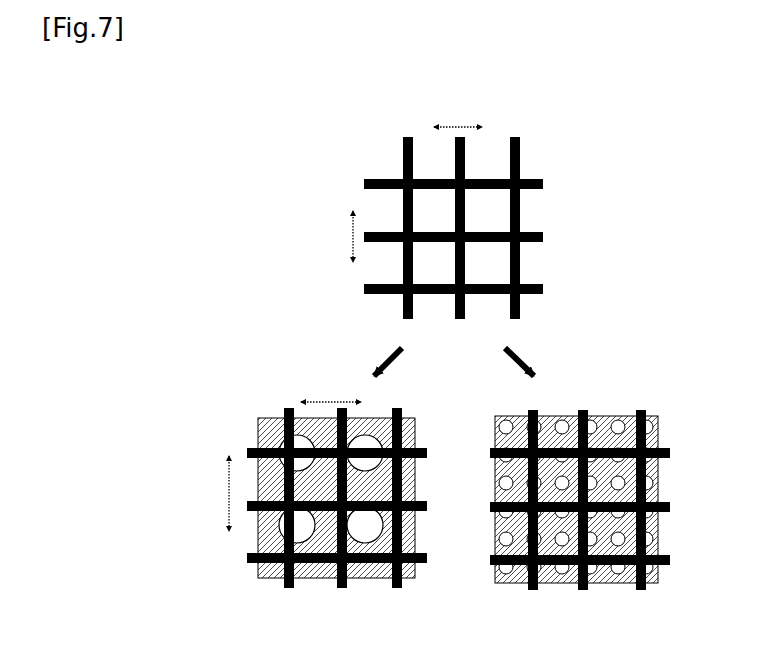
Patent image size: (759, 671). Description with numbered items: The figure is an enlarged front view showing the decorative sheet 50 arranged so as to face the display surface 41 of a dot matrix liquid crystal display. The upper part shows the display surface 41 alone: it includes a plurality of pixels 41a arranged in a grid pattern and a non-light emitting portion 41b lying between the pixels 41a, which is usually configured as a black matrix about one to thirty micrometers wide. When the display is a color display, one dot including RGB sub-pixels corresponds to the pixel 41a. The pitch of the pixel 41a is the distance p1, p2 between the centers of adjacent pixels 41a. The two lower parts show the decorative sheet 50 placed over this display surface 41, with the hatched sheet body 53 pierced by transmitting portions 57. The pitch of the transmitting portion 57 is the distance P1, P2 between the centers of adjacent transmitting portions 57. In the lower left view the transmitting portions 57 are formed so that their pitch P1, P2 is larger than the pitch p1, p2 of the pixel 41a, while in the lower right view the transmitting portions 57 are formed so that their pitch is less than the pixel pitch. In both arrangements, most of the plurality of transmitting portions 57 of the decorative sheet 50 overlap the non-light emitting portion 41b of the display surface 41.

The display surface 41 is at (462, 211).
The pixel 41a is at (490, 208).
The non-light emitting portion 41b is at (518, 150).
The decorative sheet 50 is at (228, 408).
The resin layer (hatched sheet) 53 is at (325, 538).
The transmitting portion 57 is at (301, 525).
The pitch of the pixel p1 is at (458, 107).
The pitch of the pixel p2 is at (331, 236).
The pitch of the transmitting portion P1 is at (331, 386).
The pitch of the transmitting portion P2 is at (208, 493).